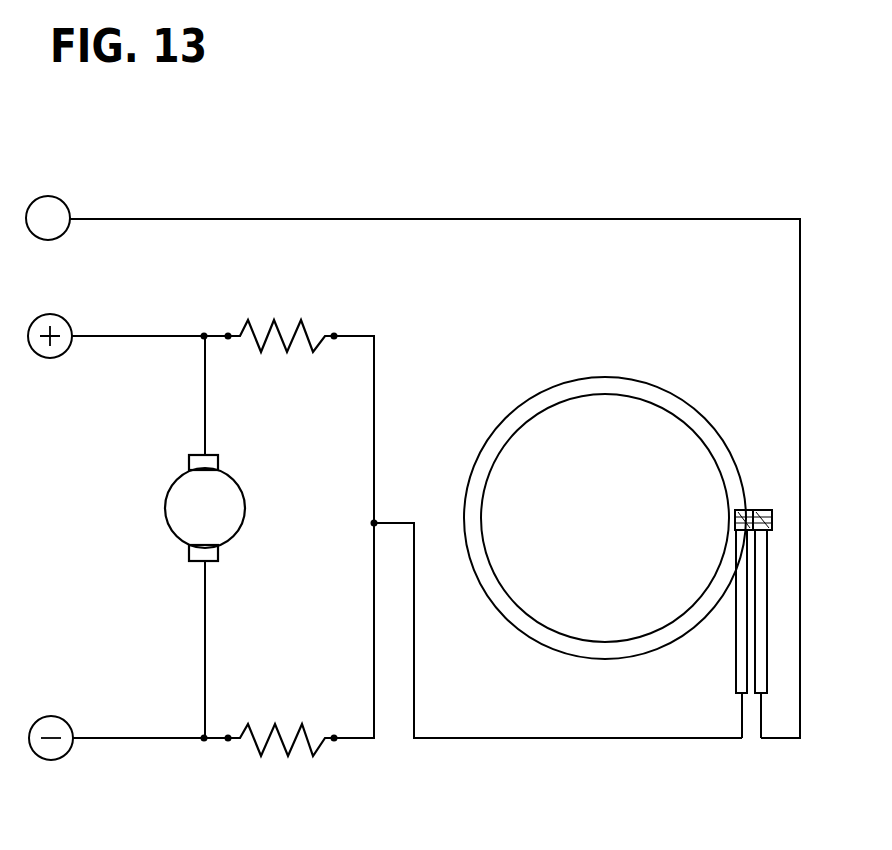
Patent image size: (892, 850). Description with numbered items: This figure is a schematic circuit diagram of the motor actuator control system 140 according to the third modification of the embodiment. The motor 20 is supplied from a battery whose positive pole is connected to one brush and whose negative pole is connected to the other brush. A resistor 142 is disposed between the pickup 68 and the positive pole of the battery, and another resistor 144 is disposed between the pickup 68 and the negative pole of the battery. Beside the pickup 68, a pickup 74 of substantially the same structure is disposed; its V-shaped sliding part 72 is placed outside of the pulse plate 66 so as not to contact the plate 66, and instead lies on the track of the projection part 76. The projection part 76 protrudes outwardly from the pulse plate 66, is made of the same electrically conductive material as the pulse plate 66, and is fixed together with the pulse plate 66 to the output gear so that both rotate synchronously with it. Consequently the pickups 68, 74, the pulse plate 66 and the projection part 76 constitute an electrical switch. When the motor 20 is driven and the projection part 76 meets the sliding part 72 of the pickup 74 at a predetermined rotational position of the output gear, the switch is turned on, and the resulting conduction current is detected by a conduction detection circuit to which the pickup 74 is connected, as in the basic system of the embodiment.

The motor actuator control system 140 is at (489, 190).
The resistor 142 is at (303, 325).
The resistor 144 is at (280, 722).
The motor 20 is at (172, 534).
The pulse plate 66 is at (582, 385).
The V-shaped sliding part 72 is at (747, 510).
The projection part 76 is at (764, 510).
The pickup 68 is at (738, 673).
The pickup 74 is at (763, 675).